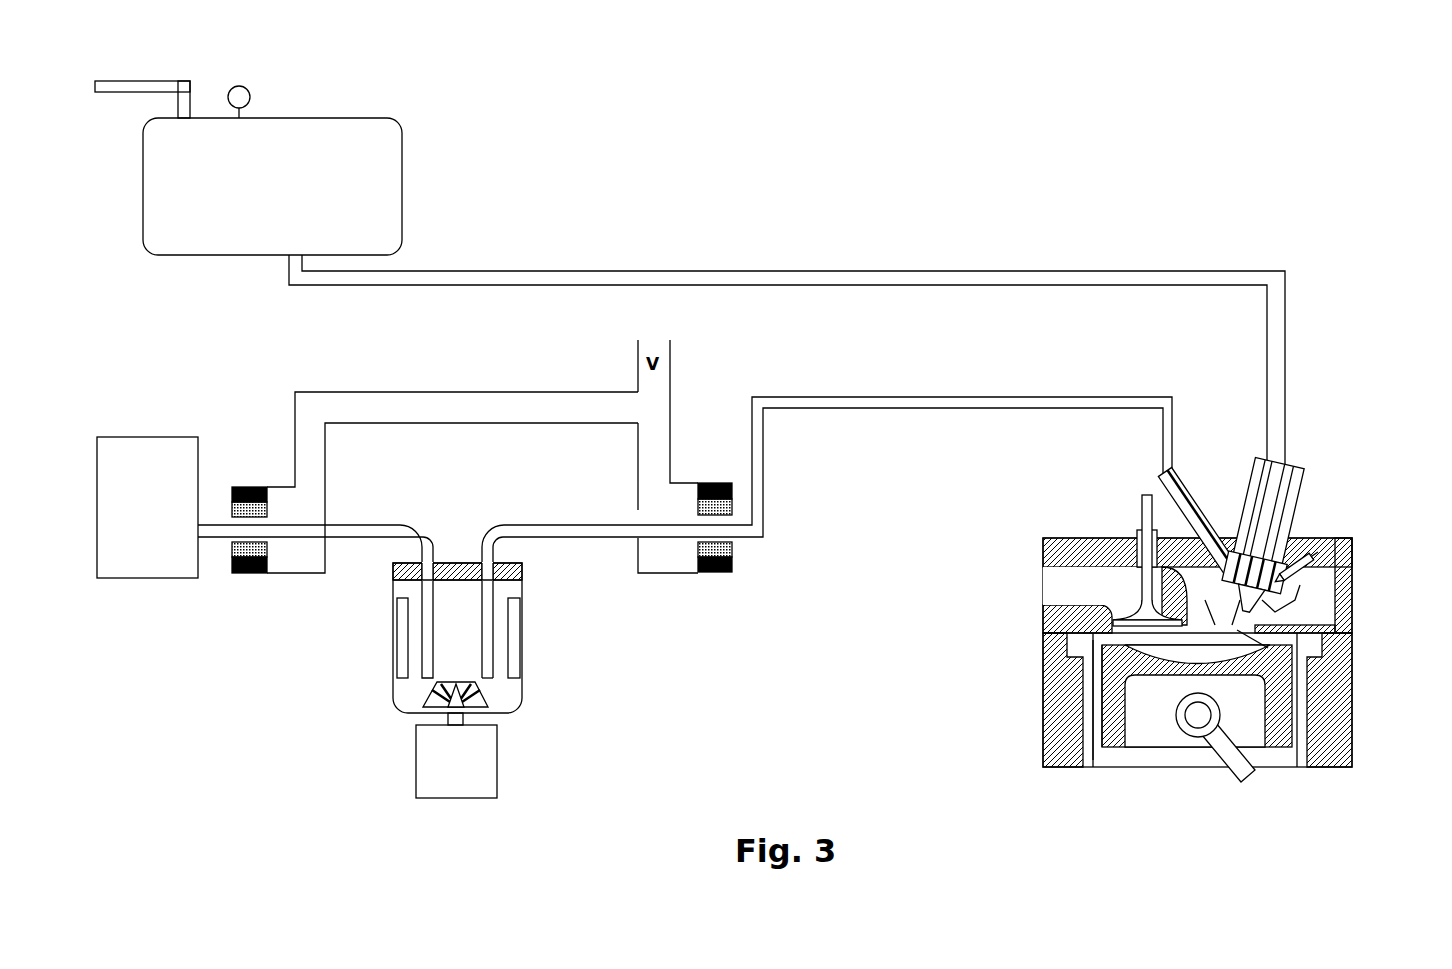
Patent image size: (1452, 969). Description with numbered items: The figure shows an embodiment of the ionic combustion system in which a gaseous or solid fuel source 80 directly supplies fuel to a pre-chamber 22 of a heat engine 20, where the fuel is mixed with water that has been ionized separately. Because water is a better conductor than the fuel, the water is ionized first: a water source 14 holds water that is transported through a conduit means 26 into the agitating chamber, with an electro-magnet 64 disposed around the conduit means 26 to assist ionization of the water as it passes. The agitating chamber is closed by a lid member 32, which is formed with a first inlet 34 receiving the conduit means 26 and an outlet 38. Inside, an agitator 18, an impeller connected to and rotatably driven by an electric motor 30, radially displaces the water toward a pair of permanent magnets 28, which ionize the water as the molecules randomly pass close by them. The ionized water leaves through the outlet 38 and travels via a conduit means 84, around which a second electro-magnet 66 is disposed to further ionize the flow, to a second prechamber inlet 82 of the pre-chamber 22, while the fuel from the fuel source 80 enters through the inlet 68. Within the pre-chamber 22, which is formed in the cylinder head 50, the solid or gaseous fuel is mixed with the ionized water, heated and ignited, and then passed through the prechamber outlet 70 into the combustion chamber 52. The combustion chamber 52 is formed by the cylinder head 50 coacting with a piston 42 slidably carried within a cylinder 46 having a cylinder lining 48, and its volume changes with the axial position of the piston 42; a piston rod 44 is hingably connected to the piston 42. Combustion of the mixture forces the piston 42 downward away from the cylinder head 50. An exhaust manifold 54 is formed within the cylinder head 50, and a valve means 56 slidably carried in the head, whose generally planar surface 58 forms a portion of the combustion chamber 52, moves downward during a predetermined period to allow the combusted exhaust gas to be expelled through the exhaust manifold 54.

The water source 14 is at (143, 437).
The agitator 18 is at (490, 698).
The heat engine 20 is at (1043, 708).
The pre-chamber 22 is at (1290, 602).
The conduit means 26 is at (377, 522).
The permanent magnets 28 is at (392, 652).
The electric motor 30 is at (497, 764).
The lid member 32 is at (455, 563).
The first inlet 34 is at (437, 563).
The outlet 38 is at (466, 530).
The piston 42 is at (1222, 640).
The piston rod 44 is at (1200, 732).
The cylinder 46 is at (1060, 687).
The cylinder lining 48 is at (1095, 743).
The cylinder head 50 is at (1043, 538).
The combustion chamber 52 is at (1197, 692).
The exhaust manifold 54 is at (1090, 586).
The valve means 56 is at (1140, 516).
The planar surface 58 is at (1148, 633).
The electro-magnet 64 is at (247, 573).
The electro-magnet 66 is at (715, 572).
The inlet 68 is at (1318, 556).
The prechamber outlet 70 is at (1268, 648).
The gaseous or solid fuel source 80 is at (402, 187).
The second prechamber inlet 82 is at (1220, 540).
The conduit means 84 is at (887, 408).